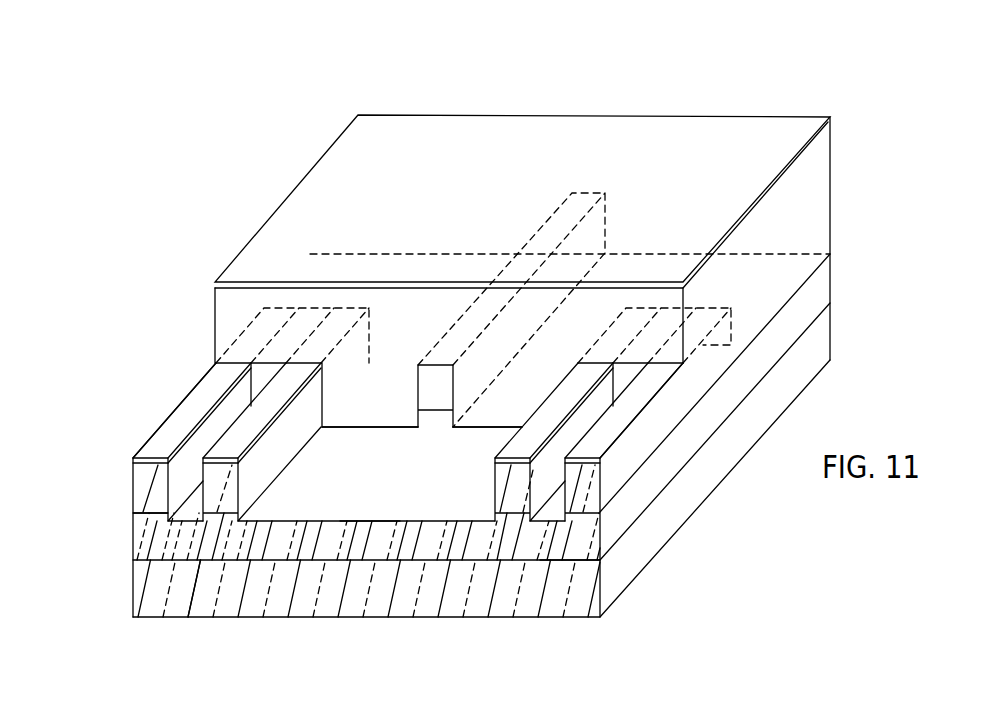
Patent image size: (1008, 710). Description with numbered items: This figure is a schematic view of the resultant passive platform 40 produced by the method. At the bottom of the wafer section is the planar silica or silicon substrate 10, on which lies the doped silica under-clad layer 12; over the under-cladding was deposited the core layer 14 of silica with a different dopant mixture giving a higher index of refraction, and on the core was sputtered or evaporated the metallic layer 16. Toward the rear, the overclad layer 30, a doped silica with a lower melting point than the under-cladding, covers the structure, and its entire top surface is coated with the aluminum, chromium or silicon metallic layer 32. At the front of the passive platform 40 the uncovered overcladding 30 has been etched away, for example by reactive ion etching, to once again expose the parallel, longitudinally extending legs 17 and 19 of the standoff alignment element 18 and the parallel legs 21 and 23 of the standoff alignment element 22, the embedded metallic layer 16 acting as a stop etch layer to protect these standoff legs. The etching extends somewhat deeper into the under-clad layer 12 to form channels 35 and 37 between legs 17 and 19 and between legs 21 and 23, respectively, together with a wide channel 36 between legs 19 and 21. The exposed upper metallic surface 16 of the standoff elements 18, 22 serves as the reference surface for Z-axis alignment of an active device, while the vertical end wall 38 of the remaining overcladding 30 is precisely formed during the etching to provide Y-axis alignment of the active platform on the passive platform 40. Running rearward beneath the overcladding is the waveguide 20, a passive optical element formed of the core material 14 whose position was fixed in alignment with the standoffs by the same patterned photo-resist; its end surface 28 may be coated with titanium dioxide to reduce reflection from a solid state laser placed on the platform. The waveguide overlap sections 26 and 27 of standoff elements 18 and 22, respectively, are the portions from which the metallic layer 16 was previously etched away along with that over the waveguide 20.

The substrate 10 is at (567, 587).
The under-clad layer 12 is at (133, 535).
The core layer 14 is at (182, 457).
The metallic layer 16 is at (818, 410).
The leg of standoff alignment element 17 is at (137, 494).
The standoff alignment element 18 is at (200, 390).
The leg of standoff alignment element 19 is at (253, 472).
The waveguide 20 is at (583, 197).
The leg of standoff alignment element 21 is at (493, 490).
The standoff alignment element 22 is at (552, 414).
The leg of standoff alignment element 23 is at (608, 479).
The waveguide overlap section 26 is at (311, 318).
The waveguide overlap section 27 is at (673, 318).
The end surface of waveguide 28 is at (435, 396).
The overclad layer 30 is at (214, 318).
The metallic layer 32 is at (503, 184).
The channel 35 is at (203, 567).
The wide channel 36 is at (373, 505).
The channel 37 is at (578, 548).
The vertical end wall 38 is at (525, 401).
The passive platform 40 is at (253, 90).